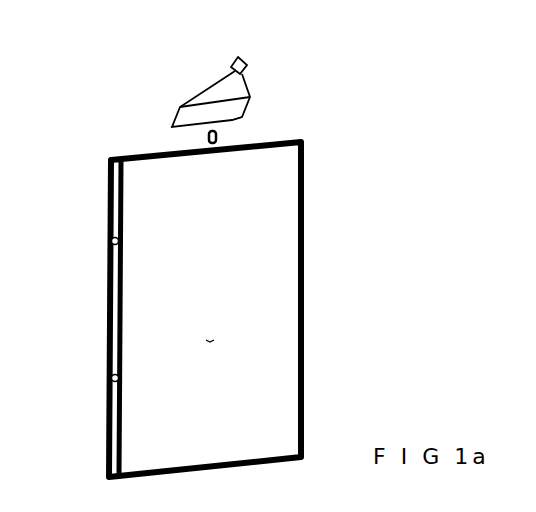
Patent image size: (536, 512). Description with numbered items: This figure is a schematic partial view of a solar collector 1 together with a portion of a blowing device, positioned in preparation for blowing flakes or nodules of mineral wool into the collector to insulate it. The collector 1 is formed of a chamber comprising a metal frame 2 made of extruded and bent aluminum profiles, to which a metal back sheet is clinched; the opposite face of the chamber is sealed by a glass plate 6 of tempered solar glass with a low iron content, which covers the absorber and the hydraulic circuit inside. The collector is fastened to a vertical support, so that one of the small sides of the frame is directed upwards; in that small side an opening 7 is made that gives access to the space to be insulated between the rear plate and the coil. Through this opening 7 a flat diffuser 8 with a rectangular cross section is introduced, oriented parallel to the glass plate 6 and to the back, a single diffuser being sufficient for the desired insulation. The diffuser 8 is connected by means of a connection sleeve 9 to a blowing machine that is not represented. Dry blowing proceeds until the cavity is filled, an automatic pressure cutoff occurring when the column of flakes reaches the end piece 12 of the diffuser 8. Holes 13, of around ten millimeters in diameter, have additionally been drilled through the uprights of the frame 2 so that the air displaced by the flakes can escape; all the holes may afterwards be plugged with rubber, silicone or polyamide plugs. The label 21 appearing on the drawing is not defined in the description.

The collector 1 is at (313, 215).
The metal frame 2 is at (303, 291).
The glass plate 6 is at (209, 327).
The opening 7 is at (197, 143).
The flat diffuser 8 is at (210, 92).
The connection sleeve 9 is at (244, 57).
The end piece 12 is at (245, 118).
The top edge 21 is at (278, 137).
The holes 13 is at (110, 237).